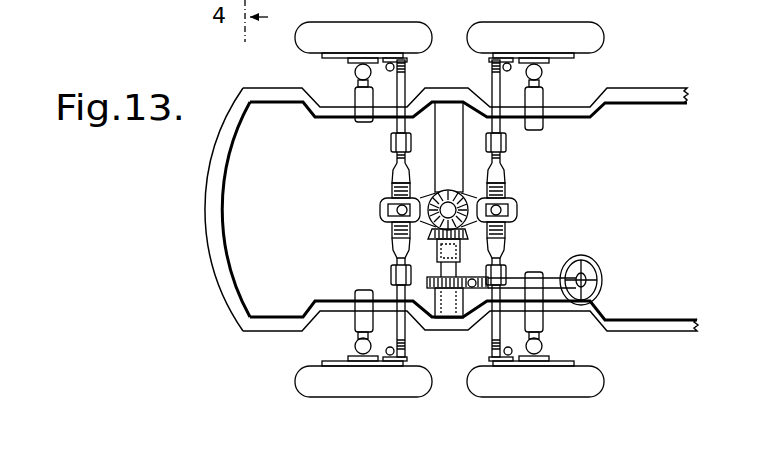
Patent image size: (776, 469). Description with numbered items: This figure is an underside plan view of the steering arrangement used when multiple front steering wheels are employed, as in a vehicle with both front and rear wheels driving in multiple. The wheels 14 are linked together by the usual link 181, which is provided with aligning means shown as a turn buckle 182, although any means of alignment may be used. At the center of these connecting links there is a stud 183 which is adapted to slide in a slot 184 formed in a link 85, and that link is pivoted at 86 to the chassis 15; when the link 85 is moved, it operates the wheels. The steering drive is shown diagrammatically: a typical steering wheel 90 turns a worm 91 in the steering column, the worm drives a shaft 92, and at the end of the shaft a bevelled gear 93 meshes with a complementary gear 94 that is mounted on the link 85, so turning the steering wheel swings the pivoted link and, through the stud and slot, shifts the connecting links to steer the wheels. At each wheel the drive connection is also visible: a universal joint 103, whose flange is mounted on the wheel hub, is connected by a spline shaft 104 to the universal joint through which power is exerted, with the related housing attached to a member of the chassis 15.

The wheels 14 is at (490, 29).
The chassis 15 is at (438, 110).
The universal joint 103 is at (355, 71).
The spline shaft 104 is at (357, 97).
The link 181 is at (397, 161).
The turn buckle 182 is at (391, 140).
The stud 183 is at (382, 208).
The slot 184 is at (389, 212).
The pivot 86 is at (422, 203).
The link 85 is at (472, 197).
The complementary gear 94 is at (450, 186).
The bevelled gear 93 is at (503, 228).
The shaft 92 is at (405, 259).
The worm 91 is at (478, 280).
The steering wheel 90 is at (602, 278).